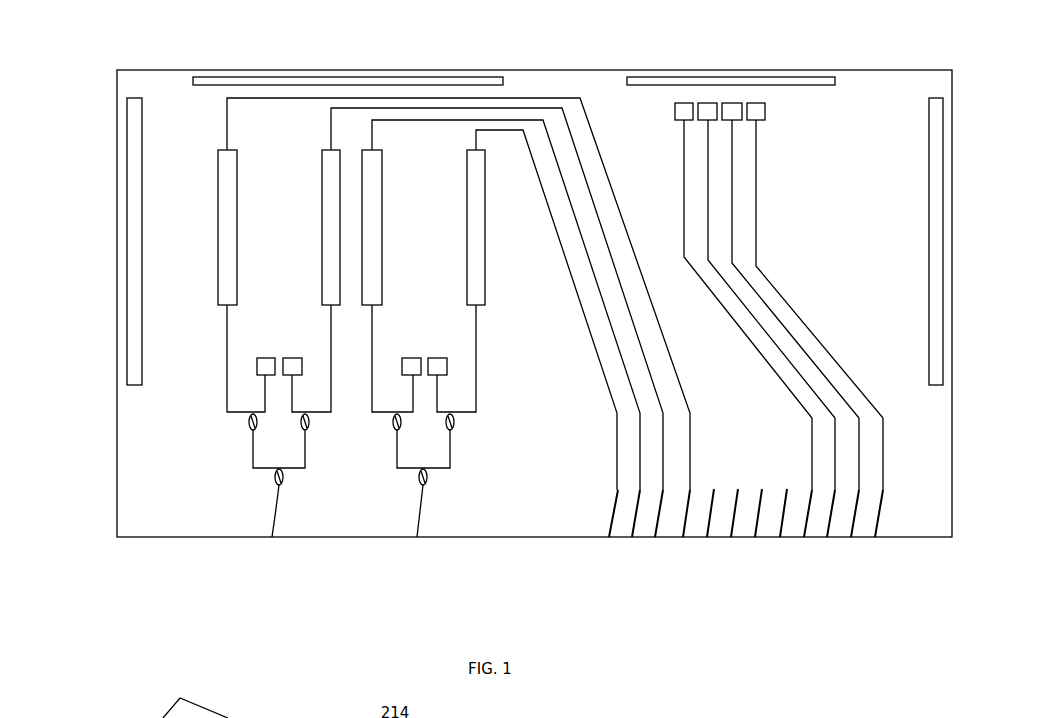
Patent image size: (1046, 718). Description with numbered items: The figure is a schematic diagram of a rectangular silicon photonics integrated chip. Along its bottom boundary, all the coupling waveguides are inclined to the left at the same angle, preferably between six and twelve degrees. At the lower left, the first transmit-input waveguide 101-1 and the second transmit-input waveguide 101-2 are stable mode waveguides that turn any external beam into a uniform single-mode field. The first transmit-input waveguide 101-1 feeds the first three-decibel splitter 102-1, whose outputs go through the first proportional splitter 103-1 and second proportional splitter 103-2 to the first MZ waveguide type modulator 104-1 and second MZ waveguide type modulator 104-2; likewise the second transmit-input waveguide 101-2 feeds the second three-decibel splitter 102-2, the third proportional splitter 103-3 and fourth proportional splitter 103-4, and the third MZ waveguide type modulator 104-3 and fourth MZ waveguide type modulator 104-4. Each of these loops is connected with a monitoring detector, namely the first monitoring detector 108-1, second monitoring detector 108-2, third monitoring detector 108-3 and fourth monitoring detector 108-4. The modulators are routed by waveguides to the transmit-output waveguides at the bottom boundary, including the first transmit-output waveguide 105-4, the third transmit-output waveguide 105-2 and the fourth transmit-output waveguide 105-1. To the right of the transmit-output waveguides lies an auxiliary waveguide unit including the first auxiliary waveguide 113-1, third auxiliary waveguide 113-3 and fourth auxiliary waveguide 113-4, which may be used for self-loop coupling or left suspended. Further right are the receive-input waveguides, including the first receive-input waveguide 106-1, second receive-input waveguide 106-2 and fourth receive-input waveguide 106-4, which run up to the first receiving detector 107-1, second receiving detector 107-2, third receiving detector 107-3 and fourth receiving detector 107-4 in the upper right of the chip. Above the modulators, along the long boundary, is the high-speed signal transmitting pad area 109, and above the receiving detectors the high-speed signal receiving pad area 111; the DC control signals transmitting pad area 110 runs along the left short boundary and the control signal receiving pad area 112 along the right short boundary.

The first transmit-input waveguide 101-1 is at (272, 526).
The second transmit-input waveguide 101-2 is at (413, 527).
The first 3 dB splitter 102-1 is at (273, 479).
The second 3 dB splitter 102-2 is at (417, 479).
The first proportional splitter 103-1 is at (246, 426).
The second proportional splitter 103-2 is at (298, 427).
The third proportional splitter 103-3 is at (404, 428).
The fourth proportional splitter 103-4 is at (457, 426).
The first MZ waveguide type modulator 104-1 is at (222, 233).
The second MZ waveguide type modulator 104-2 is at (322, 216).
The third MZ waveguide type modulator 104-3 is at (384, 231).
The fourth MZ waveguide type modulator 104-4 is at (487, 238).
The fourth transmit-output waveguide 105-1 is at (610, 531).
The third transmit-output waveguide 105-2 is at (630, 541).
The first transmit-output waveguide 105-4 is at (681, 540).
The first receive-input waveguide 106-1 is at (803, 539).
The second receive-input waveguide 106-2 is at (829, 539).
The fourth receive-input waveguide 106-4 is at (881, 531).
The first receiving detector 107-1 is at (677, 104).
The second receiving detector 107-2 is at (707, 101).
The third receiving detector 107-3 is at (735, 101).
The fourth receiving detector 107-4 is at (768, 123).
The first monitoring detector 108-1 is at (255, 368).
The second monitoring detector 108-2 is at (295, 357).
The third monitoring detector 108-3 is at (411, 357).
The fourth monitoring detector 108-4 is at (450, 366).
The high-speed signal transmitting pad area 109 is at (294, 80).
The DC control signals transmitting pad area 110 is at (134, 220).
The high-speed signal receiving pad area 111 is at (822, 78).
The control signal receiving pad area 112 is at (929, 296).
The first auxiliary waveguide 113-1 is at (706, 539).
The third auxiliary waveguide 113-3 is at (761, 484).
The fourth auxiliary waveguide 113-4 is at (777, 539).